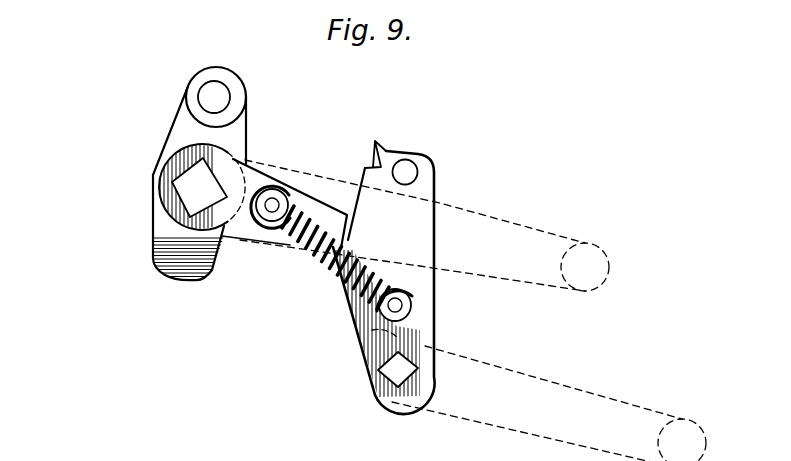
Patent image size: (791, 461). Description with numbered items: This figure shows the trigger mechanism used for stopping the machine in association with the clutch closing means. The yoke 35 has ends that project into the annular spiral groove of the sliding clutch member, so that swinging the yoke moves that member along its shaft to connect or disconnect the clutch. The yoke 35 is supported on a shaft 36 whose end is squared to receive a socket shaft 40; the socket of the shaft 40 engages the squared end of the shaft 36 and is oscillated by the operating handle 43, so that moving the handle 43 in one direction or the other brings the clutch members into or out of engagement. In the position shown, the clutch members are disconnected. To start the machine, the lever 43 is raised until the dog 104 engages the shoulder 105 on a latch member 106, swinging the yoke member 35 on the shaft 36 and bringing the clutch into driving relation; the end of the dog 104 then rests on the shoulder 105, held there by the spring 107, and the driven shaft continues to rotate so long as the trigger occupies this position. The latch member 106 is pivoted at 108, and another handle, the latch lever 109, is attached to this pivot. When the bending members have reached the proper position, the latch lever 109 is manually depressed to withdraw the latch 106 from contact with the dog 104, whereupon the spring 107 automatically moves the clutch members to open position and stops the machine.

The yoke 35 is at (155, 237).
The shaft 36 is at (225, 98).
The socket shaft 40 is at (212, 186).
The operating handle 43 is at (507, 234).
The dog 104 is at (293, 193).
The shoulder 105 is at (385, 147).
The latch member 106 is at (425, 220).
The spring 107 is at (328, 272).
The pivot 108 is at (405, 364).
The latch lever 109 is at (610, 413).